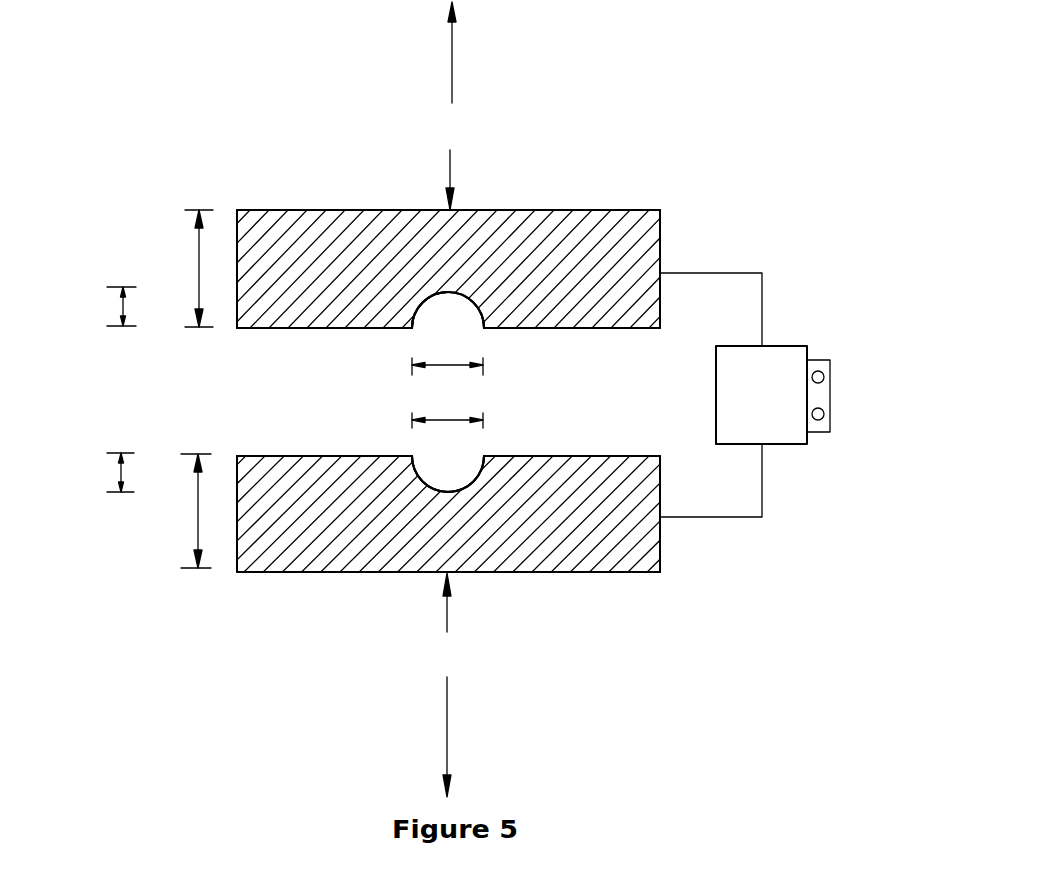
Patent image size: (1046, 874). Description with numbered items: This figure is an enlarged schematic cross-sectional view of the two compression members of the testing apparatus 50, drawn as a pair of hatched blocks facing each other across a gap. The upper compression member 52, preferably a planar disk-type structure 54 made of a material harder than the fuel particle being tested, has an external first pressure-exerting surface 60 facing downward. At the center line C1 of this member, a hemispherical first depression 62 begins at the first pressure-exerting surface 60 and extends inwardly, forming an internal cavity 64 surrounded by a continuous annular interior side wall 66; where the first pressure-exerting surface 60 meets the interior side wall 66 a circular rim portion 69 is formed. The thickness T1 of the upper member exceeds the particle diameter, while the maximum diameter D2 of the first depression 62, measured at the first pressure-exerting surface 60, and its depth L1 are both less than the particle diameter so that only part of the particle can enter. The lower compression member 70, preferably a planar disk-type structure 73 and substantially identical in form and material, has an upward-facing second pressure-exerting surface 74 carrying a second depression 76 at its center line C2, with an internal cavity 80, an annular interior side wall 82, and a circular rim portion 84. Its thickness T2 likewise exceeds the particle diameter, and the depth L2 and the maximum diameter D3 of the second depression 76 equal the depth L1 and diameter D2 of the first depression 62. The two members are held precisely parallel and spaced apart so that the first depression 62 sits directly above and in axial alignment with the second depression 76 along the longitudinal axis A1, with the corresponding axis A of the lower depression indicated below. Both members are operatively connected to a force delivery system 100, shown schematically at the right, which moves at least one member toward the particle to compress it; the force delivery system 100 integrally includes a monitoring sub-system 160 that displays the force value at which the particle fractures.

The testing apparatus 50 is at (725, 154).
The upper compression member 52 is at (528, 210).
The planar disk-type structure 54 is at (322, 210).
The first pressure-exerting surface 60 is at (272, 333).
The first depression 62 is at (457, 307).
The interior side wall 66 is at (445, 300).
The circular rim portion 69 is at (440, 306).
The internal cavity 64 is at (468, 328).
The lower compression member 70 is at (630, 560).
The planar disk-type structure 73 is at (265, 578).
The second pressure-exerting surface 74 is at (322, 456).
The second depression 76 is at (468, 472).
The internal cavity 80 is at (463, 457).
The interior side wall 82 is at (445, 478).
The circular rim portion 84 is at (410, 456).
The force delivery system 100 is at (768, 345).
The monitoring sub-system 160 is at (820, 358).
The longitudinal axis of the first depression A1 is at (452, 53).
The downward force direction A is at (447, 728).
The clamping force on upper block C1 is at (450, 167).
The center line of the lower compression member C2 is at (447, 615).
The thickness of upper block T1 is at (202, 267).
The thickness of the lower compression member T2 is at (198, 513).
The length of the first depression L1 is at (122, 305).
The length of the second depression L2 is at (120, 470).
The maximum diameter of the first depression D2 is at (448, 368).
The maximum diameter of the second depression D3 is at (448, 420).